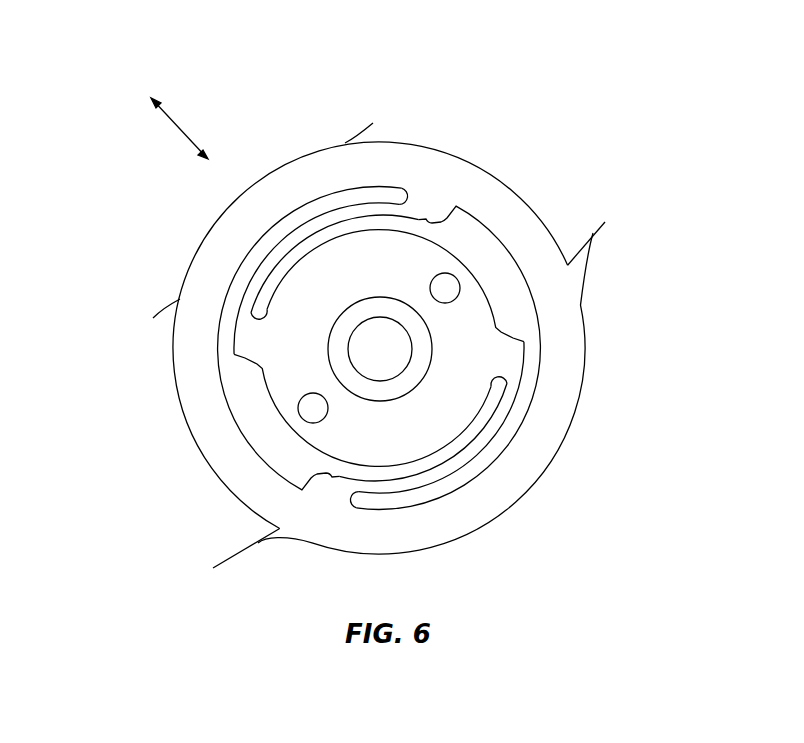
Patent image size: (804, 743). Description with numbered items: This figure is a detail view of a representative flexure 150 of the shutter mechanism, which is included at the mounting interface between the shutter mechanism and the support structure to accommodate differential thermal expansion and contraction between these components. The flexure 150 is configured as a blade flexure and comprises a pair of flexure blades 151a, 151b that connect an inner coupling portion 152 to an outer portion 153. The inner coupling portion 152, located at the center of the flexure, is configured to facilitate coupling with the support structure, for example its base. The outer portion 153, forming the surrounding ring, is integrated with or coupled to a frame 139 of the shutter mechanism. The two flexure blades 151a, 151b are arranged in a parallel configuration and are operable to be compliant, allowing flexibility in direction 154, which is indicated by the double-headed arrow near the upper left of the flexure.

The flexure 150 is at (386, 321).
The frame 139 is at (573, 228).
The outer portion 153 is at (563, 307).
The inner coupling portion 152 is at (467, 355).
The flexure blade 151a is at (486, 443).
The flexure blade 151b is at (299, 237).
The direction 154 is at (180, 133).